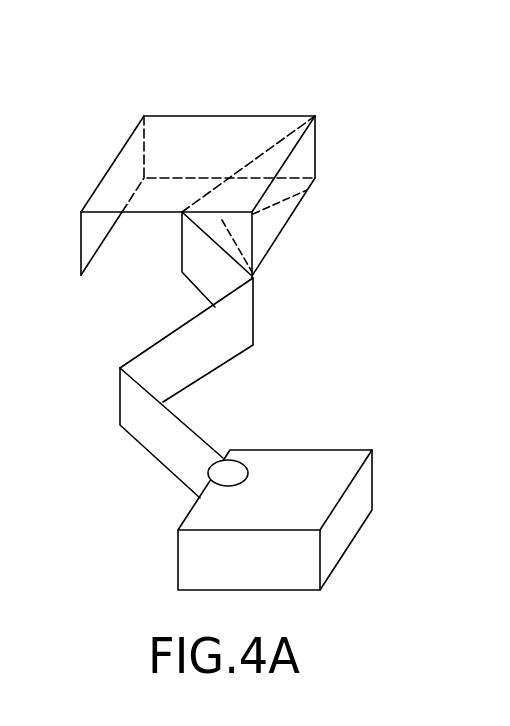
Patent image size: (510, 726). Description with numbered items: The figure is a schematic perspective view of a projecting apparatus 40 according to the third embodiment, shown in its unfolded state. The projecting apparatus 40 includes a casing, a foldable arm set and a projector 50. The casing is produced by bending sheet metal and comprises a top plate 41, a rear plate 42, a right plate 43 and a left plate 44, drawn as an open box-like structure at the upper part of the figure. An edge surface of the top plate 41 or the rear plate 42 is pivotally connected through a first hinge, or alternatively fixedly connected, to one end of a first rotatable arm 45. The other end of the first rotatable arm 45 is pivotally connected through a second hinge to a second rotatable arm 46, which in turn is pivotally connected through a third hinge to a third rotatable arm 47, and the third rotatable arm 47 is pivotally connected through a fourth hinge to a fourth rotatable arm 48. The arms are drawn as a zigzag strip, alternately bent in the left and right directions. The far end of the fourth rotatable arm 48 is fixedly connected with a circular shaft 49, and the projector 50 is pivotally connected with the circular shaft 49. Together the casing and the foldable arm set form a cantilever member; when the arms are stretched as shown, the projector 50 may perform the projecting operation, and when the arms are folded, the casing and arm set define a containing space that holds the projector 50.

The projecting apparatus 40 is at (168, 70).
The top plate 41 is at (135, 165).
The rear plate 42 is at (233, 132).
The right plate 43 is at (287, 186).
The left plate 44 is at (93, 233).
The first rotatable arm 45 is at (255, 282).
The second rotatable arm 46 is at (193, 248).
The third rotatable arm 47 is at (195, 355).
The fourth rotatable arm 48 is at (170, 445).
The circular shaft 49 is at (227, 470).
The projector 50 is at (348, 520).